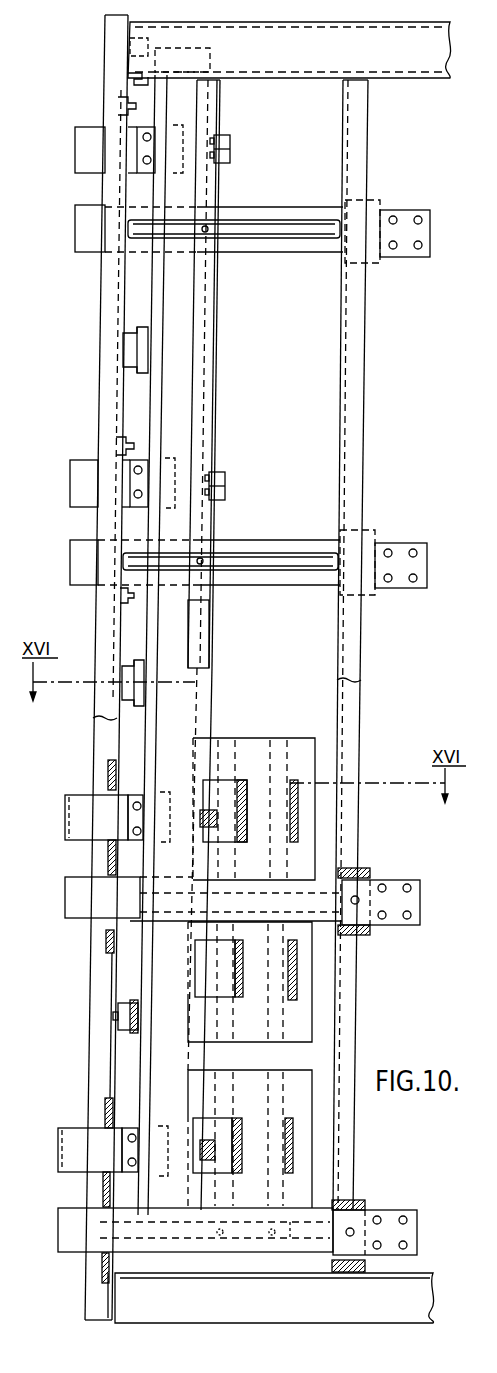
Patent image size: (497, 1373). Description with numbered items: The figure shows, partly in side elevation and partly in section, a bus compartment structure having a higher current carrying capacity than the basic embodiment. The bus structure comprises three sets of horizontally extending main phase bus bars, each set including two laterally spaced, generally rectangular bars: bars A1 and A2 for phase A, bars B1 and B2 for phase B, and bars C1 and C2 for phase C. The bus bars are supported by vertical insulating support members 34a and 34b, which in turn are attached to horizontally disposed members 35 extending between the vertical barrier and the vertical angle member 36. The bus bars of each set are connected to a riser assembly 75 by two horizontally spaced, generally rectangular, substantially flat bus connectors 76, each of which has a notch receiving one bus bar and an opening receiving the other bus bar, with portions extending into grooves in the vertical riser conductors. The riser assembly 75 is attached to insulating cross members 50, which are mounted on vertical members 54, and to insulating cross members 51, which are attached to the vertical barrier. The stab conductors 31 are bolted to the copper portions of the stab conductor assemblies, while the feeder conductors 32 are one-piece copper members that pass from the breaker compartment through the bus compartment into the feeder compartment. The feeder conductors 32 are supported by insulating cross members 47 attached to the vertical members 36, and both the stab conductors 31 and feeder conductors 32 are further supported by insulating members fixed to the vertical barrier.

The stab conductors 31 is at (97, 125).
The feeder conductors 32 is at (75, 240).
The insulating support member 34a is at (250, 1243).
The insulating support member 34b is at (297, 1241).
The horizontally disposed members 35 is at (304, 570).
The vertical angle member 36 is at (359, 1007).
The insulating cross members 47 is at (365, 1202).
The insulating cross members 50 is at (227, 135).
The insulating cross members 51 is at (132, 1000).
The vertical members 54 is at (195, 618).
The riser assembly 75 is at (186, 380).
The bus connectors 76 is at (247, 737).
The phase A bus bar A1 is at (244, 780).
The phase A bus bar A2 is at (294, 780).
The phase B bus bar B1 is at (262, 968).
The phase B bus bar B2 is at (286, 996).
The phase C bus bar C1 is at (262, 1136).
The phase C bus bar C2 is at (283, 1168).